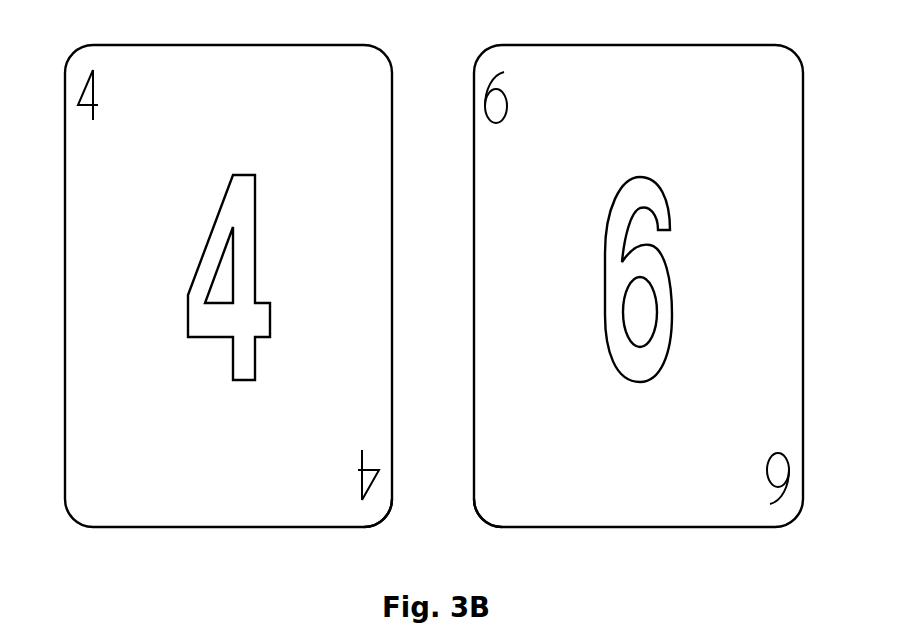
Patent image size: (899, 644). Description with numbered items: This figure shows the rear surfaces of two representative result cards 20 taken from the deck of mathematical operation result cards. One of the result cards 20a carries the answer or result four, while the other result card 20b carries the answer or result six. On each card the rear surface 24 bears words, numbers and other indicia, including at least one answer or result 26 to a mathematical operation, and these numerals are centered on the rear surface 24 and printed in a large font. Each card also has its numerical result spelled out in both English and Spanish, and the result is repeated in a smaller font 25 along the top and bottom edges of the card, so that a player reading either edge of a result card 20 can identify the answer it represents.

The result card 20 is at (443, 52).
The result card 20a is at (180, 565).
The result card 20b is at (627, 564).
The rear surface 24 is at (87, 176).
The smaller font 25 is at (498, 500).
The answer or result 26 is at (196, 279).